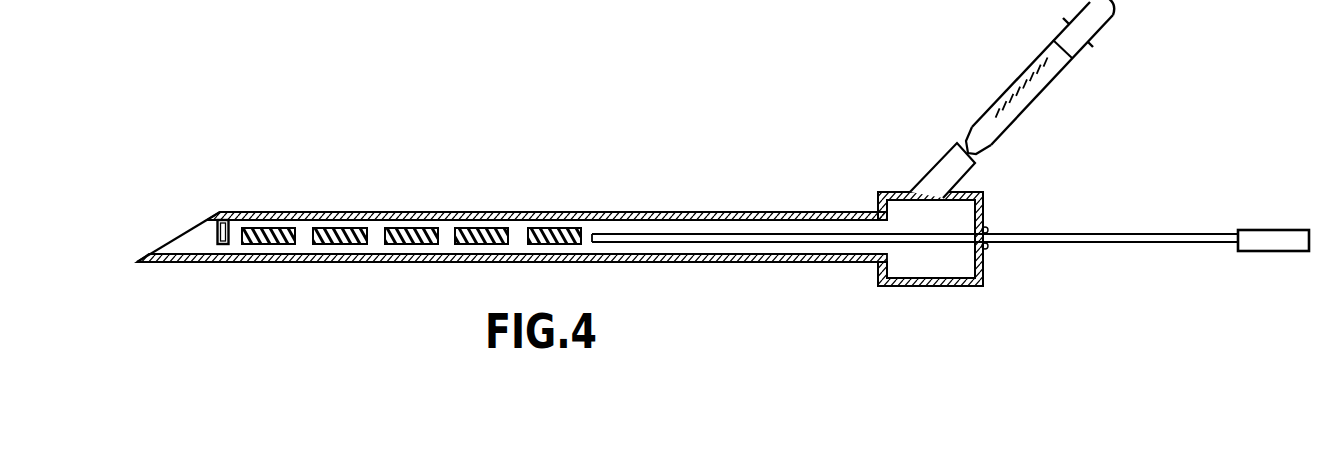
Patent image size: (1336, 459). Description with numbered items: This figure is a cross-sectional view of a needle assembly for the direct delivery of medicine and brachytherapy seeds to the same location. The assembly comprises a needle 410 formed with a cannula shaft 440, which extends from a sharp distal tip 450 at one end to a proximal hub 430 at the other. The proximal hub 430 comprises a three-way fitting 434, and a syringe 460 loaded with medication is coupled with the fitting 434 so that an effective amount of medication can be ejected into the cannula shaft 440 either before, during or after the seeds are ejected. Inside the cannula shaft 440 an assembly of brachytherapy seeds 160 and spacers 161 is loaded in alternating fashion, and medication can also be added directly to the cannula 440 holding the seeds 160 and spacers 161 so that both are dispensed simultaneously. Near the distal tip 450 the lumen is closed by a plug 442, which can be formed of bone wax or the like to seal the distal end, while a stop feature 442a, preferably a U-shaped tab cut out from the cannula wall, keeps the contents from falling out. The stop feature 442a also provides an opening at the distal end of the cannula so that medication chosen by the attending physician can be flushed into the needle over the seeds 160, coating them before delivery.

The needle 410 is at (605, 157).
The cannula shaft 440 is at (546, 207).
The distal tip 450 is at (173, 240).
The plug 442 is at (215, 232).
The stop feature 442a is at (217, 223).
The brachytherapy seeds 160 is at (338, 228).
The spacers 161 is at (410, 228).
The proximal hub 430 is at (928, 284).
The three-way fitting 434 is at (970, 170).
The syringe 460 is at (1095, 31).